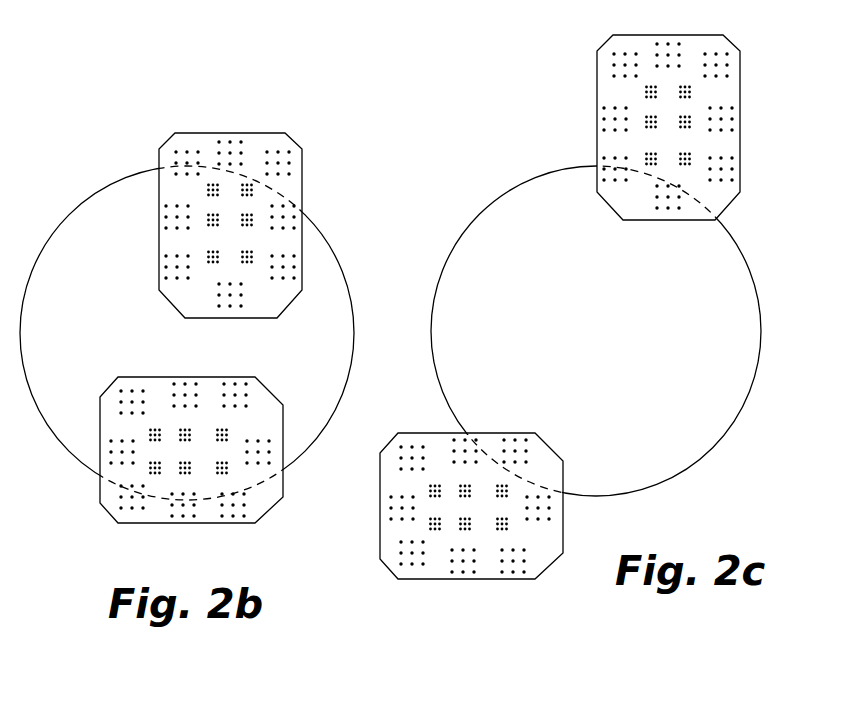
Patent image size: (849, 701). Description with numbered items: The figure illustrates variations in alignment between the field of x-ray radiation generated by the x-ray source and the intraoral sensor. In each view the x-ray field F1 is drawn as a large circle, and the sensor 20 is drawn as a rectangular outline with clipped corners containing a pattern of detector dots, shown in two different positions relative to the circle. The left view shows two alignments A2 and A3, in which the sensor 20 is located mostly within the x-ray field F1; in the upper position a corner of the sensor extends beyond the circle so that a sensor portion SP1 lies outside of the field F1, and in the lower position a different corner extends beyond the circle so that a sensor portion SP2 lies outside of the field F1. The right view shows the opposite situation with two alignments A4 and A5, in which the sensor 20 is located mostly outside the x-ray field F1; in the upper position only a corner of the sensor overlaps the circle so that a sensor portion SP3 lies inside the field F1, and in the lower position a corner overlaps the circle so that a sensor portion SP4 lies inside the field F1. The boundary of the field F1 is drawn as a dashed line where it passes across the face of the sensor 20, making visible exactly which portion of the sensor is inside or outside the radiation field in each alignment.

In FIG. 2B, the sensor 20 is at (302, 258).
In FIG. 2C, the sensor 20 is at (597, 120).
In FIG. 2B, the x-ray field F1 is at (82, 465).
In FIG. 2C, the x-ray field F1 is at (743, 408).
In FIG. 2B, the sensor portion SP1 is at (155, 141).
In FIG. 2B, the sensor portion SP2 is at (289, 500).
In FIG. 2C, the sensor portion SP3 is at (601, 212).
In FIG. 2C, the sensor portion SP4 is at (568, 457).
In FIG. 2B, the alignment A2 is at (320, 219).
In FIG. 2B, the alignment A3 is at (269, 519).
In FIG. 2C, the alignment A4 is at (763, 155).
In FIG. 2C, the alignment A5 is at (475, 608).